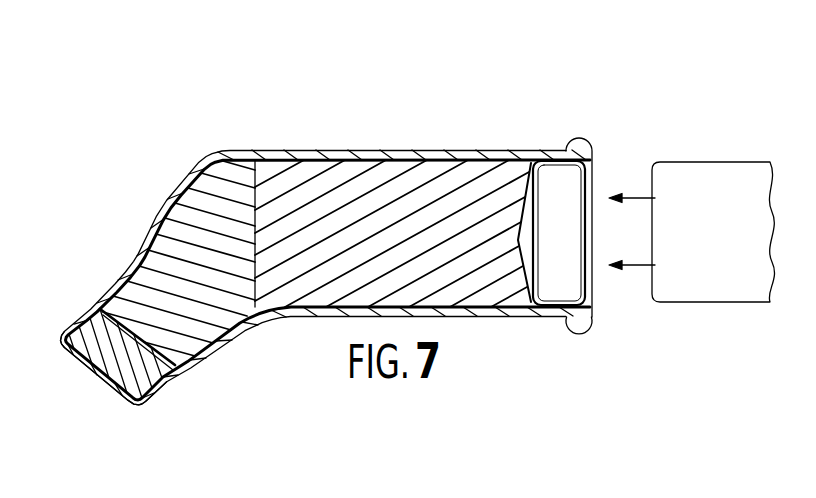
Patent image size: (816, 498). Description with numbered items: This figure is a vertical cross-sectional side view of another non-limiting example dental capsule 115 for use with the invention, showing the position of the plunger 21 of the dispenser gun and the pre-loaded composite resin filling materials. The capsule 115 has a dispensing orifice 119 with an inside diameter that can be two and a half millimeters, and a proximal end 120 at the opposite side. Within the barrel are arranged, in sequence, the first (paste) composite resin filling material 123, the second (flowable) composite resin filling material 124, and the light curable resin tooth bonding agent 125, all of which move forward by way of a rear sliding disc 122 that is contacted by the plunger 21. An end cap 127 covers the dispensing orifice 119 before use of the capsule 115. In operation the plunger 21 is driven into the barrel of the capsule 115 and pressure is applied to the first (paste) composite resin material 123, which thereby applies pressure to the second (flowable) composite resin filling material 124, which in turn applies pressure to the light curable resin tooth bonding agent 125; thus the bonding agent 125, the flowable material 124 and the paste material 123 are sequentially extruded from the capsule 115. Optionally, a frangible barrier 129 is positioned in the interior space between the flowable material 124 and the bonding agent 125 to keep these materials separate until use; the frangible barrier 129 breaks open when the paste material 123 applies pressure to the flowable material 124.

The plunger 21 is at (686, 282).
The dental capsule 115 is at (594, 318).
The dispensing orifice 119 is at (157, 393).
The proximal end 120 is at (593, 148).
The rear sliding disc 122 is at (549, 176).
The first (paste) composite resin filling material 123 is at (425, 175).
The second (flowable) composite resin filling material 124 is at (181, 219).
The light curable resin tooth bonding agent 125 is at (107, 323).
The end cap 127 is at (113, 378).
The frangible barrier 129 is at (184, 366).